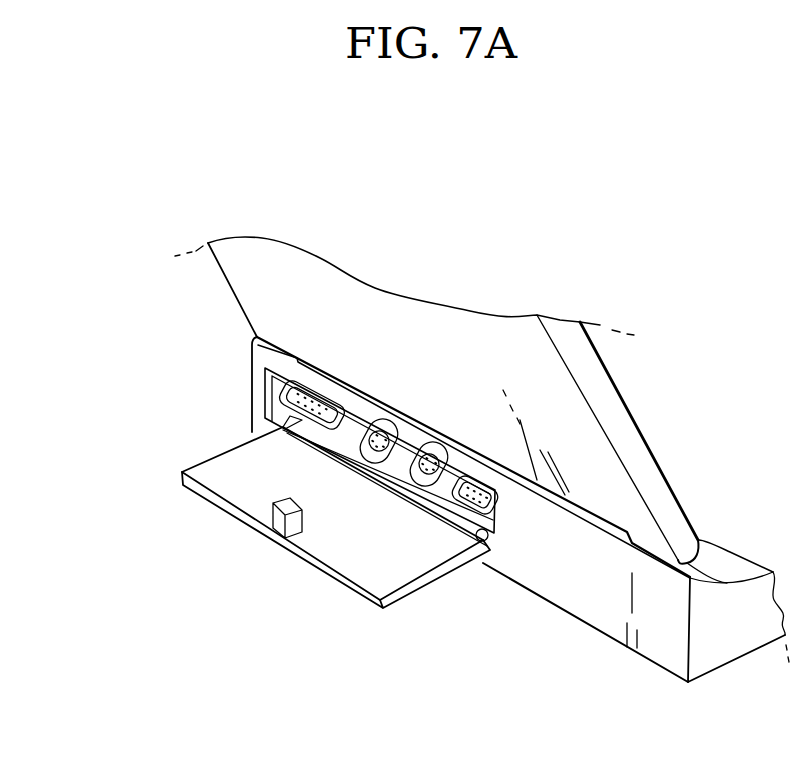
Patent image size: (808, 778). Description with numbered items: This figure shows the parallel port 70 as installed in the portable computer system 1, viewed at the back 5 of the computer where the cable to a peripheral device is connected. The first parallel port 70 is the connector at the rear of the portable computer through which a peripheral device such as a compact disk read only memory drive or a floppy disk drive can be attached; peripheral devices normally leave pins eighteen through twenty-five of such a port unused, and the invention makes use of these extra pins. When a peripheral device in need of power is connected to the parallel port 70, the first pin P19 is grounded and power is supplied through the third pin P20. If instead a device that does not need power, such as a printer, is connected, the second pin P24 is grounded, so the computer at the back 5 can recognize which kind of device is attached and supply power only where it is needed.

The portable computer 1 is at (431, 507).
The back of the computer 5 is at (432, 557).
The parallel port 70 is at (318, 450).
The first pin P19 is at (295, 405).
The third pin P20 is at (212, 447).
The second pin P24 is at (303, 418).